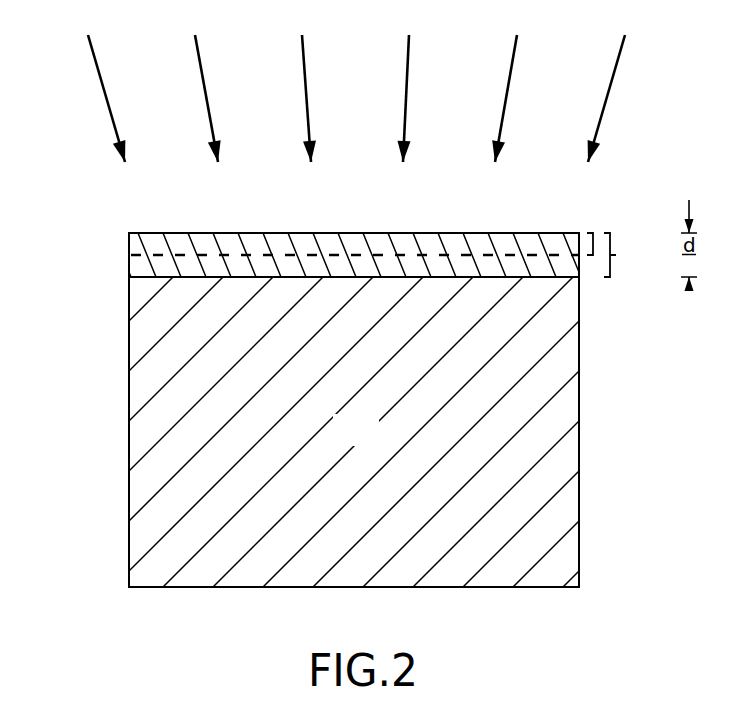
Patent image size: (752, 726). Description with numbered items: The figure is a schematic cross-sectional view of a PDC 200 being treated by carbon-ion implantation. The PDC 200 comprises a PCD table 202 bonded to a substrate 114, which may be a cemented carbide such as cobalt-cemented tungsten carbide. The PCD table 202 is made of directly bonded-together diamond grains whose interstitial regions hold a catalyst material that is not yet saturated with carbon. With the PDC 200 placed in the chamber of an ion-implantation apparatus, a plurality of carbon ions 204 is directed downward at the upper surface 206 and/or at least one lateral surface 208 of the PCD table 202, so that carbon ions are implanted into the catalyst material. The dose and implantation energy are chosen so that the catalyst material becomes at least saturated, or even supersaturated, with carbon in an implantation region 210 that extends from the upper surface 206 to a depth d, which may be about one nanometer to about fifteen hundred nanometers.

The substrate 114 is at (373, 442).
The PDC 200 is at (651, 206).
The PCD table 202 is at (616, 255).
The carbon ions 204 is at (611, 82).
The upper surface 206 is at (407, 233).
The lateral surface 208 is at (130, 255).
The implantation region 210 is at (600, 234).